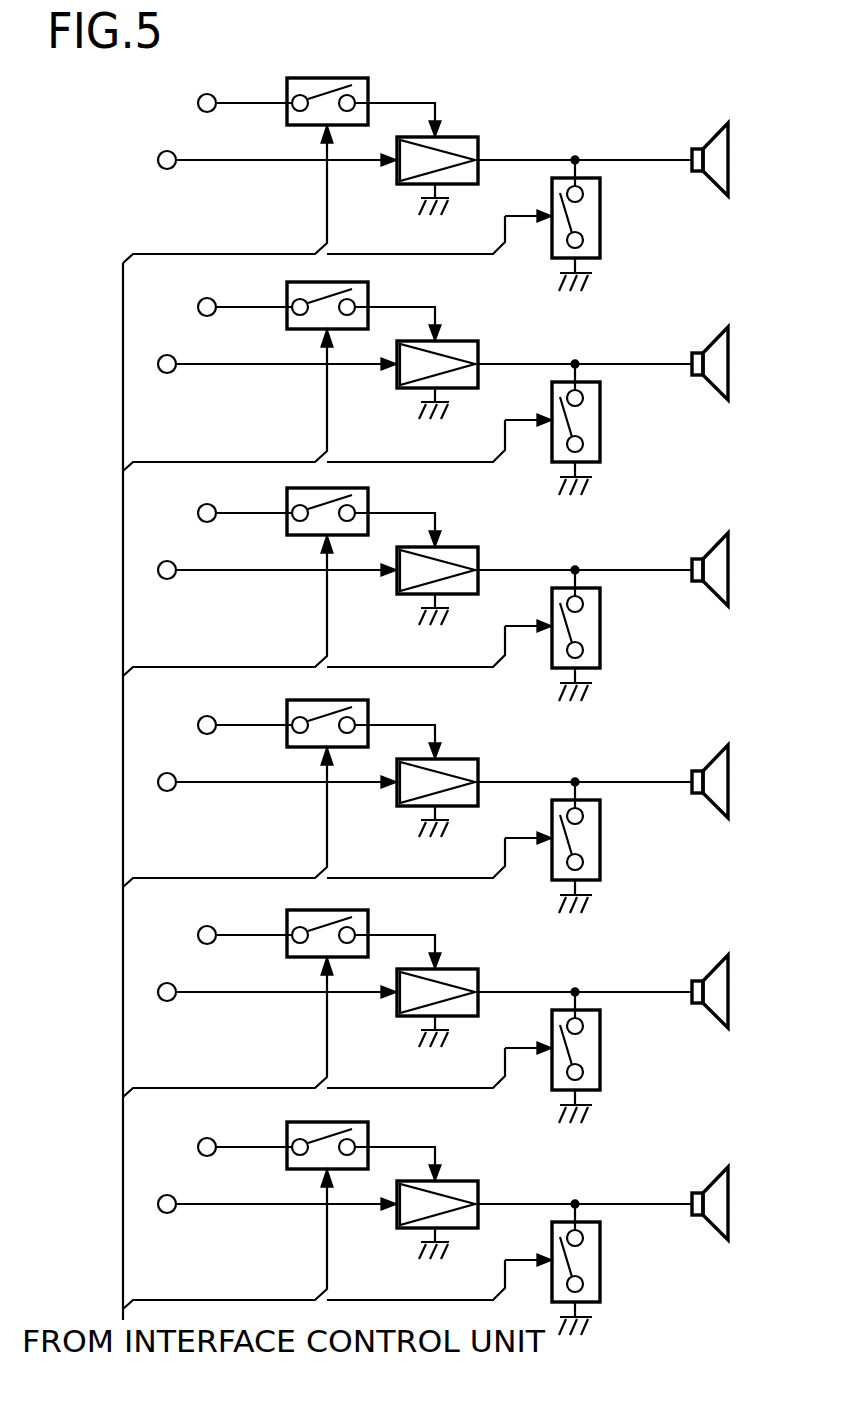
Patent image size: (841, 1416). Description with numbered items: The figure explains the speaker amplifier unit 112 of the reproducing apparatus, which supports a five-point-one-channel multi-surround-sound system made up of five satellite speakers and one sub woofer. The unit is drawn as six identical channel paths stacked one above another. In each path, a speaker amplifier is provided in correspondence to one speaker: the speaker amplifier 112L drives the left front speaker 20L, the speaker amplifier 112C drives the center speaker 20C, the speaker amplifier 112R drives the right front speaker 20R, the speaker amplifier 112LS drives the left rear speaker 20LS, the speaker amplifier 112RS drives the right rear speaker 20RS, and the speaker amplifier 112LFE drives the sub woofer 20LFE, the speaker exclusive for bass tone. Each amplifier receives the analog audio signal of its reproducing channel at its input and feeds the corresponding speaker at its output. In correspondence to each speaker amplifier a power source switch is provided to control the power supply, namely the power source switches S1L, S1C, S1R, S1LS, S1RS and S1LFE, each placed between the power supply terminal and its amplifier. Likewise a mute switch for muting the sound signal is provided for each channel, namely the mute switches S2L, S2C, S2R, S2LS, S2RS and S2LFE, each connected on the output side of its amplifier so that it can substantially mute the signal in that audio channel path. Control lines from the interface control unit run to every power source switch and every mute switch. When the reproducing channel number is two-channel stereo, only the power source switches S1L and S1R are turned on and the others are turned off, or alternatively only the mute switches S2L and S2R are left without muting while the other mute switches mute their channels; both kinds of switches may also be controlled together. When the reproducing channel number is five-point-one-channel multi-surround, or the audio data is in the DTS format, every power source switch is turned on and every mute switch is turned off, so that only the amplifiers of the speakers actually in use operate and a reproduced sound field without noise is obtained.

The speaker amplifier unit 112 is at (280, 49).
The power source switch S1L is at (368, 79).
The speaker amplifier 112L is at (480, 119).
The left front speaker 20L is at (707, 142).
The mute switch S2L is at (600, 233).
The power source switch S1C is at (368, 295).
The speaker amplifier 112C is at (460, 356).
The center speaker 20C is at (695, 348).
The mute switch S2C is at (619, 438).
The power source switch S1R is at (368, 501).
The speaker amplifier 112R is at (460, 562).
The right front speaker 20R is at (695, 554).
The mute switch S2R is at (619, 644).
The power source switch S1LS is at (375, 713).
The speaker amplifier 112LS is at (467, 774).
The left rear speaker 20LS is at (690, 766).
The mute switch S2LS is at (626, 856).
The power source switch S1RS is at (377, 923).
The speaker amplifier 112RS is at (469, 984).
The right rear speaker 20RS is at (690, 976).
The mute switch S2RS is at (628, 1066).
The power source switch S1LFE is at (384, 1135).
The speaker amplifier 112LFE is at (475, 1196).
The sub woofer 20LFE is at (689, 1188).
The mute switch S2LFE is at (635, 1278).